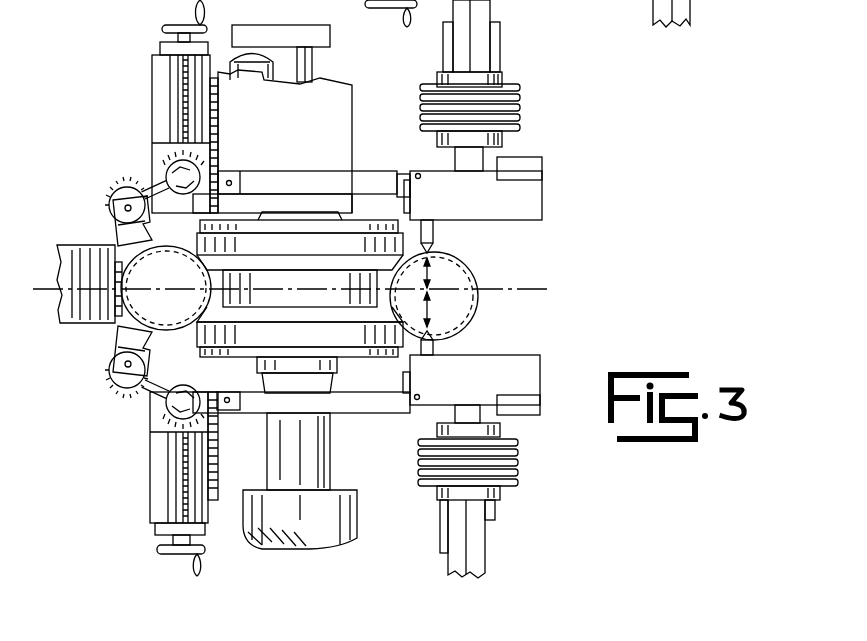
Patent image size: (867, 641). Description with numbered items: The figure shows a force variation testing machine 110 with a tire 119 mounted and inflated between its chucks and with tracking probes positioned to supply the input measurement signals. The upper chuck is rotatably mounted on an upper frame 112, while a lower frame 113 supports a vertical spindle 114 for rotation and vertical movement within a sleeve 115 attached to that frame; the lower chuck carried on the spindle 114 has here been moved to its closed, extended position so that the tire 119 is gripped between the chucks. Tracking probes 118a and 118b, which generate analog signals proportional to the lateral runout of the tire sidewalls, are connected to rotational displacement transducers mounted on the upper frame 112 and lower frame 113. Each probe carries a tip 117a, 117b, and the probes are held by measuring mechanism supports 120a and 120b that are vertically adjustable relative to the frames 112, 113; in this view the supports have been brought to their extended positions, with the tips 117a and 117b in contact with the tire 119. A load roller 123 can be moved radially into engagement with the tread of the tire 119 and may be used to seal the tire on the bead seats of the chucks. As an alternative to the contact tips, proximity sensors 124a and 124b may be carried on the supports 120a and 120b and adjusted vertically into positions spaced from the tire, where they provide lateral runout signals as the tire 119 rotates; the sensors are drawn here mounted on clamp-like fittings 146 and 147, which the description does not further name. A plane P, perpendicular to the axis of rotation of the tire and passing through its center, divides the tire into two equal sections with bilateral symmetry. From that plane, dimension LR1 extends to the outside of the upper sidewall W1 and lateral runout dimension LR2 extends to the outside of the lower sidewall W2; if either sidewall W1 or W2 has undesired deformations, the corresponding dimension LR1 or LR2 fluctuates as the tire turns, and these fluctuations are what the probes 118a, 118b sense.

The force variation testing machine 110 is at (562, 167).
The upper frame 112 is at (337, 115).
The lower frame 113 is at (473, 536).
The vertical spindle 114 is at (330, 452).
The sleeve 115 is at (383, 513).
The tip 117a is at (434, 250).
The tip 117b is at (434, 331).
The tracking probe 118a is at (434, 227).
The tracking probe 118b is at (434, 347).
The tire 119 is at (478, 316).
The measuring mechanism support 120a is at (533, 204).
The measuring mechanism support 120b is at (533, 376).
The load roller 123 is at (71, 254).
The proximity sensor 124a is at (120, 228).
The proximity sensor 124b is at (107, 348).
The upper clamp 146 is at (120, 247).
The lower clamp 147 is at (140, 330).
The sidewall W1 is at (173, 250).
The sidewall W2 is at (173, 332).
The dimension LR1 is at (427, 273).
The lateral runout dimension LR2 is at (421, 309).
The plane P is at (567, 293).